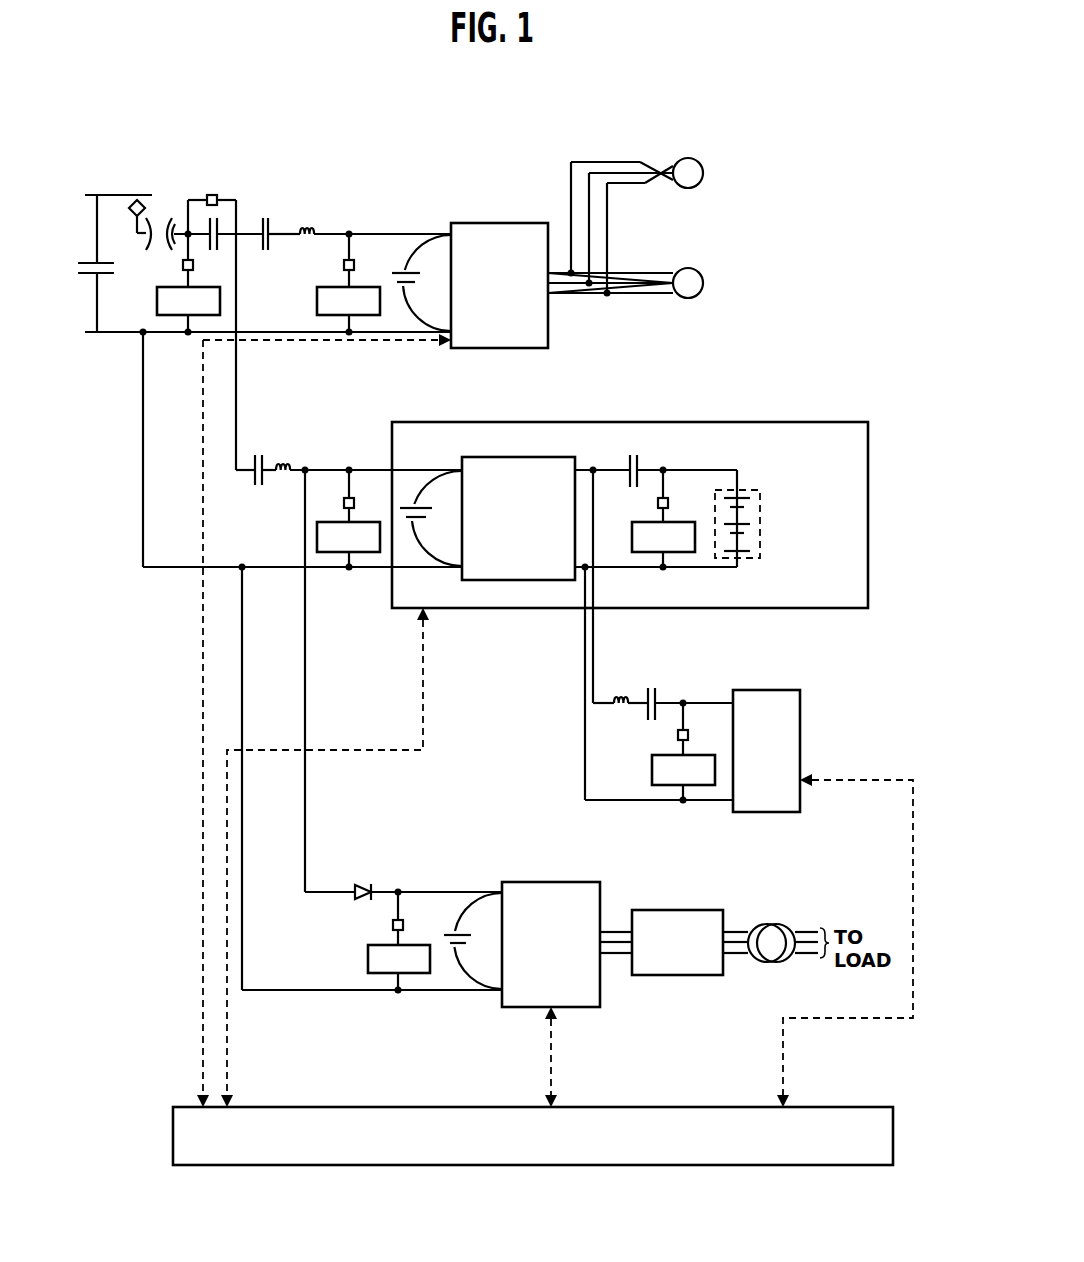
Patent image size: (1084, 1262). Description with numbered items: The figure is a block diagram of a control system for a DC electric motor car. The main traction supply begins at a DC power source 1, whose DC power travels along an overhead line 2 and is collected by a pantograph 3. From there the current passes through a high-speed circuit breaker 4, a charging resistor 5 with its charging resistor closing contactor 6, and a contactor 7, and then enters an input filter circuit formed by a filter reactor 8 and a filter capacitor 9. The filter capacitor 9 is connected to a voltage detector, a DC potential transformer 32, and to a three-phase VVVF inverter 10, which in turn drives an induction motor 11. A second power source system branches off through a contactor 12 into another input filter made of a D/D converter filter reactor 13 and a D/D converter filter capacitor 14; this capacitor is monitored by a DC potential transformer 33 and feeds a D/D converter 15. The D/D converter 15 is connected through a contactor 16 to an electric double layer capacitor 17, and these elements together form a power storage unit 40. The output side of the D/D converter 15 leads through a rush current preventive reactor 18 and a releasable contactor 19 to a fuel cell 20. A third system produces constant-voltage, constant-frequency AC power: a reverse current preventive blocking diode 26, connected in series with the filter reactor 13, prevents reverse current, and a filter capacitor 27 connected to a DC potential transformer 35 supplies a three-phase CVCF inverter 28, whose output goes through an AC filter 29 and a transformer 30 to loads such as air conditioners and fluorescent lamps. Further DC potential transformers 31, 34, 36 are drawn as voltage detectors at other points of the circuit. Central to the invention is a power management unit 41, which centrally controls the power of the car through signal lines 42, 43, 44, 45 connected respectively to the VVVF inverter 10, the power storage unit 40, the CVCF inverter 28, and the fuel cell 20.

The DC power source 1 is at (85, 256).
The overhead line 2 is at (116, 192).
The pantograph 3 is at (146, 203).
The high-speed circuit breaker 4 is at (151, 253).
The charging resistor 5 is at (212, 194).
The charging resistor closing contactor 6 is at (216, 249).
The contactor 7 is at (263, 215).
The filter reactor 8 is at (307, 227).
The filter capacitor 9 is at (395, 270).
The VVVF inverter 10 is at (496, 222).
The induction motor 11 is at (690, 157).
The contactor 12 is at (256, 452).
The D/D converter filter reactor 13 is at (286, 462).
The D/D converter filter capacitor 14 is at (415, 505).
The D/D converter 15 is at (512, 455).
The contactor 16 is at (626, 460).
The electric double layer capacitor (EDLC) 17 is at (763, 520).
The rush current preventive reactor 18 is at (620, 699).
The releasable contactor 19 is at (653, 686).
The fuel cell 20 is at (800, 725).
The reverse current preventive blocking diode 26 is at (363, 884).
The filter capacitor 27 is at (455, 929).
The CVCF inverter 28 is at (550, 881).
The AC filter 29 is at (675, 909).
The transformer 30 is at (764, 925).
The DC potential transformer 31 is at (157, 300).
The voltage detector (DC potential transformer) 32 is at (317, 300).
The voltage detector (DC potential transformer) 33 is at (317, 535).
The DC potential transformer 34 is at (681, 553).
The voltage detector (DC potential transformer) 35 is at (368, 957).
The DC potential transformer 36 is at (652, 767).
The power storage unit 40 is at (797, 422).
The power management unit 41 is at (705, 1107).
The signal line 42 is at (203, 1033).
The signal line 43 is at (227, 1033).
The signal line 44 is at (551, 1050).
The signal line 45 is at (878, 1020).